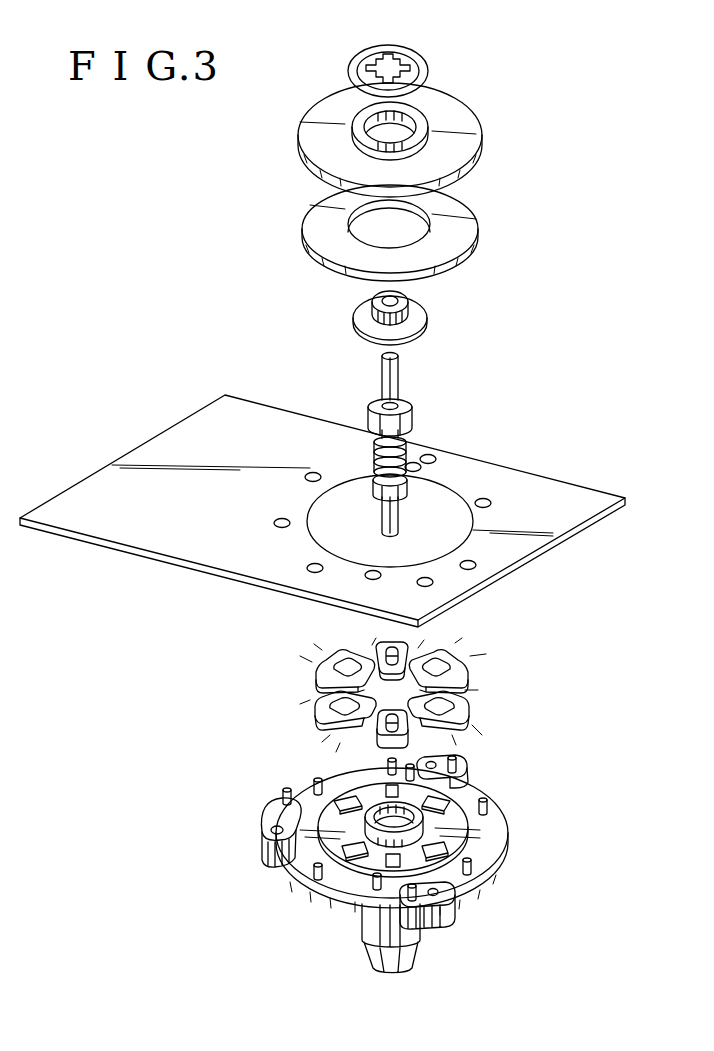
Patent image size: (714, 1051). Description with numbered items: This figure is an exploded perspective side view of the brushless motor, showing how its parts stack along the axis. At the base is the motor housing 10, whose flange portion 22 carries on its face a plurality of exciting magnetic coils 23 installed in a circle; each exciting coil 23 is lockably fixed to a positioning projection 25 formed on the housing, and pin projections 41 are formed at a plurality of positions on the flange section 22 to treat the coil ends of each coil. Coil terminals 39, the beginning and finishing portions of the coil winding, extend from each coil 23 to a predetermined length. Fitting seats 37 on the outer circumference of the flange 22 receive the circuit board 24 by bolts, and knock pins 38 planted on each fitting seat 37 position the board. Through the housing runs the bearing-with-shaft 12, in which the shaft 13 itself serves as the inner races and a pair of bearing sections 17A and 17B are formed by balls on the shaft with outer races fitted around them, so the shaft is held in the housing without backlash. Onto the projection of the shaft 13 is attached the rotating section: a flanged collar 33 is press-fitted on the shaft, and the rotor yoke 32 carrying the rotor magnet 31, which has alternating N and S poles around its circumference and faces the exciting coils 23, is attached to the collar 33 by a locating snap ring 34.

The motor housing 10 is at (381, 844).
The bearing-with-shaft 12 is at (401, 434).
The shaft 13 is at (392, 374).
The bearing section 17A is at (437, 493).
The bearing section 17B is at (404, 422).
The flange portion 22 is at (487, 820).
The exciting magnetic coil 23 is at (322, 670).
The circuit board 24 is at (200, 437).
The positioning projection 25 is at (438, 853).
The rotor magnet 31 is at (462, 232).
The rotor yoke 32 is at (460, 107).
The flanged collar 33 is at (415, 326).
The snap ring 34 is at (414, 50).
The fitting seat 37 is at (270, 813).
The knock pin 38 is at (284, 790).
The coil terminal 39 is at (392, 695).
The pin projection 41 is at (316, 778).